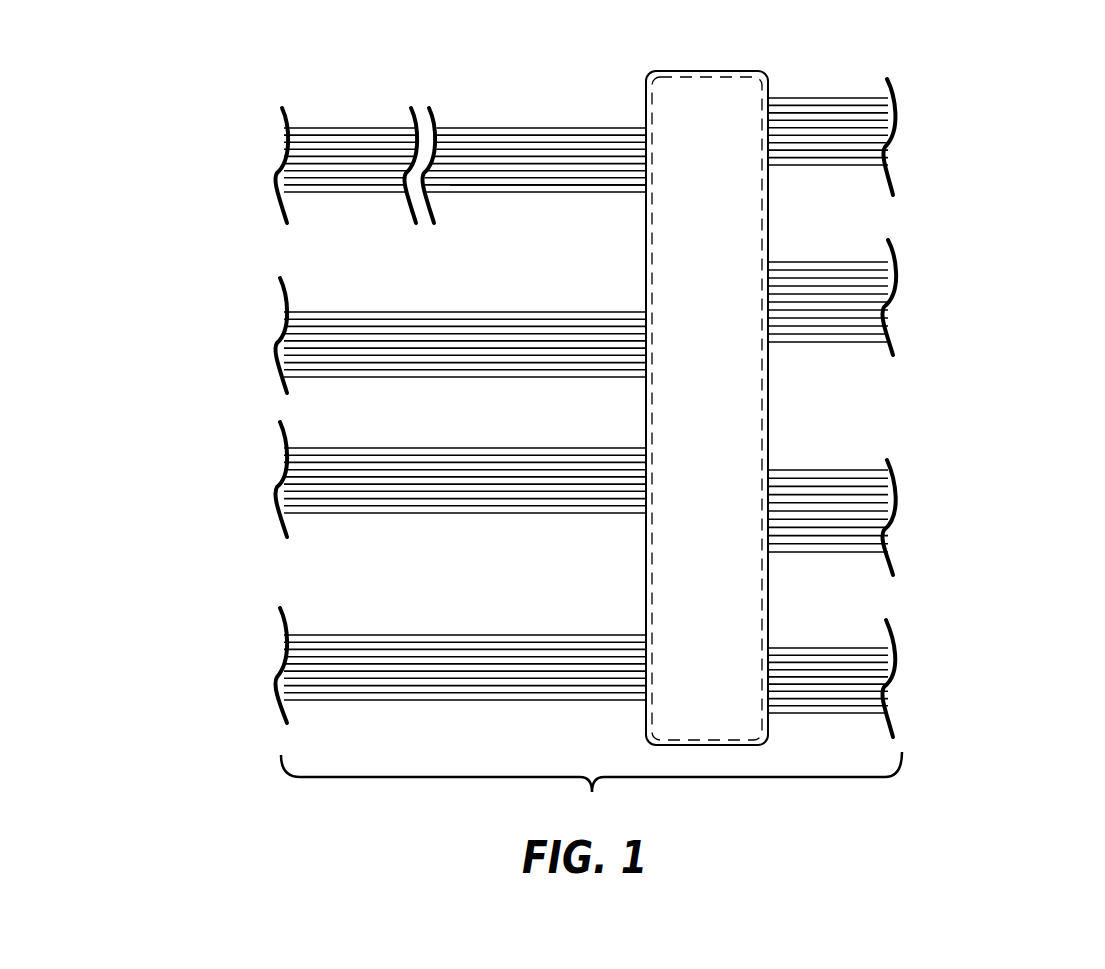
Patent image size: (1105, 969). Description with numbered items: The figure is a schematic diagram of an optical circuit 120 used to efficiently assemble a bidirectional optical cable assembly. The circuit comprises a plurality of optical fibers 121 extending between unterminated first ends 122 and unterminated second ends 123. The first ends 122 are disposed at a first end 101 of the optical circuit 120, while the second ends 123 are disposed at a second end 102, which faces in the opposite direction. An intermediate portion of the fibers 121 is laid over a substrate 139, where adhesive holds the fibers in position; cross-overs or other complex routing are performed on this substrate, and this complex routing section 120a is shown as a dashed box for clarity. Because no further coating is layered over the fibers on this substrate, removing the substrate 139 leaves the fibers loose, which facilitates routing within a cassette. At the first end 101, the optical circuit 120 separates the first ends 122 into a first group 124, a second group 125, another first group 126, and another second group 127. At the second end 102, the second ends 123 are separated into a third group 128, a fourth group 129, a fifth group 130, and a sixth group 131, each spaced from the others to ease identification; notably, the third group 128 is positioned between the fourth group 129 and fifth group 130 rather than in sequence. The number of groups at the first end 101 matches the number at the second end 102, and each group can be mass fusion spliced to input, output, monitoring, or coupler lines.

The first end of the optical circuit 101 is at (1009, 423).
The second end of the optical circuit 102 is at (198, 386).
The optical circuit 120 is at (591, 788).
The complex routing section 120a is at (737, 65).
The optical fibers 121 is at (522, 128).
The first ends 122 is at (895, 102).
The second ends 123 is at (423, 130).
The first group 124 is at (868, 251).
The second group 125 is at (858, 88).
The another first group 126 is at (868, 461).
The another second group 127 is at (873, 631).
The third group 128 is at (357, 711).
The fourth group 129 is at (497, 205).
The fifth group 130 is at (359, 386).
The sixth group 131 is at (359, 522).
The substrate 139 is at (728, 433).